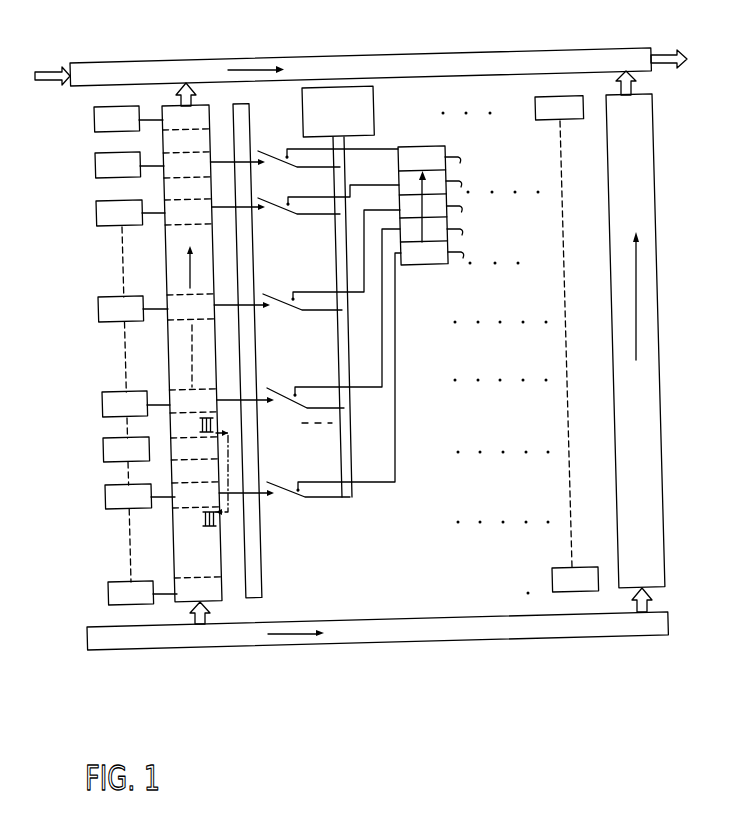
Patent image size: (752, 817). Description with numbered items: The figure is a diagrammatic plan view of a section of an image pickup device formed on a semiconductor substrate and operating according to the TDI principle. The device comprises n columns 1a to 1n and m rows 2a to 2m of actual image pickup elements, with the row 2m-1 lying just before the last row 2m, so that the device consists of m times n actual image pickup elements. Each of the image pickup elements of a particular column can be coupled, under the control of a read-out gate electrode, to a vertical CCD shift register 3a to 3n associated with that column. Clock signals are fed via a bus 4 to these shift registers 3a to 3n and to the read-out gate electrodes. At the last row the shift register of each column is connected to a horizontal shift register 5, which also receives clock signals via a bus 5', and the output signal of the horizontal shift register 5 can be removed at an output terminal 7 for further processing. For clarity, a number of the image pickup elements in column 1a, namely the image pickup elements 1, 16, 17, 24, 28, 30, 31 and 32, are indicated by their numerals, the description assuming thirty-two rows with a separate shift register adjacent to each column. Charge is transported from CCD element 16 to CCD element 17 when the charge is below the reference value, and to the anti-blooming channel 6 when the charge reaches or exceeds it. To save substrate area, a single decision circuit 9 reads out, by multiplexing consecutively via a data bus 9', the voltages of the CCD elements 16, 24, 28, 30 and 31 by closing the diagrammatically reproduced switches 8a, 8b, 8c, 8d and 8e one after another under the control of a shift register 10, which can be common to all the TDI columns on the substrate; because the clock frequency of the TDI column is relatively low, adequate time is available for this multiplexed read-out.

The image pickup element 1 is at (156, 593).
The image pickup element 16 is at (154, 496).
The image pickup element 17 is at (153, 449).
The image pickup element 24 is at (151, 404).
The image pickup element 28 is at (148, 309).
The image pickup element 30 is at (146, 213).
The image pickup element 31 is at (145, 165).
The image pickup element 32 is at (144, 119).
The first column of image pickup elements 1a is at (155, 661).
The last column of image pickup elements 1n is at (598, 653).
The first row of image pickup elements 2a is at (70, 585).
The last row of image pickup elements 2m is at (57, 112).
The second to last row of image pickup elements 2m-1 is at (58, 157).
The vertical CCD shift register 3a is at (226, 661).
The vertical CCD shift register 3n is at (668, 653).
The bus 4 is at (95, 651).
The horizontal shift register 5 is at (360, 61).
The bus 5' is at (52, 60).
The anti-blooming channel 6 is at (260, 547).
The output terminal 7 is at (682, 68).
The switch 8a is at (310, 375).
The switch 8b is at (308, 318).
The switch 8c is at (307, 260).
The switch 8d is at (305, 196).
The switch 8e is at (305, 150).
The decision circuit 9 is at (348, 111).
The data bus 9' is at (352, 333).
The shift register 10 is at (441, 152).